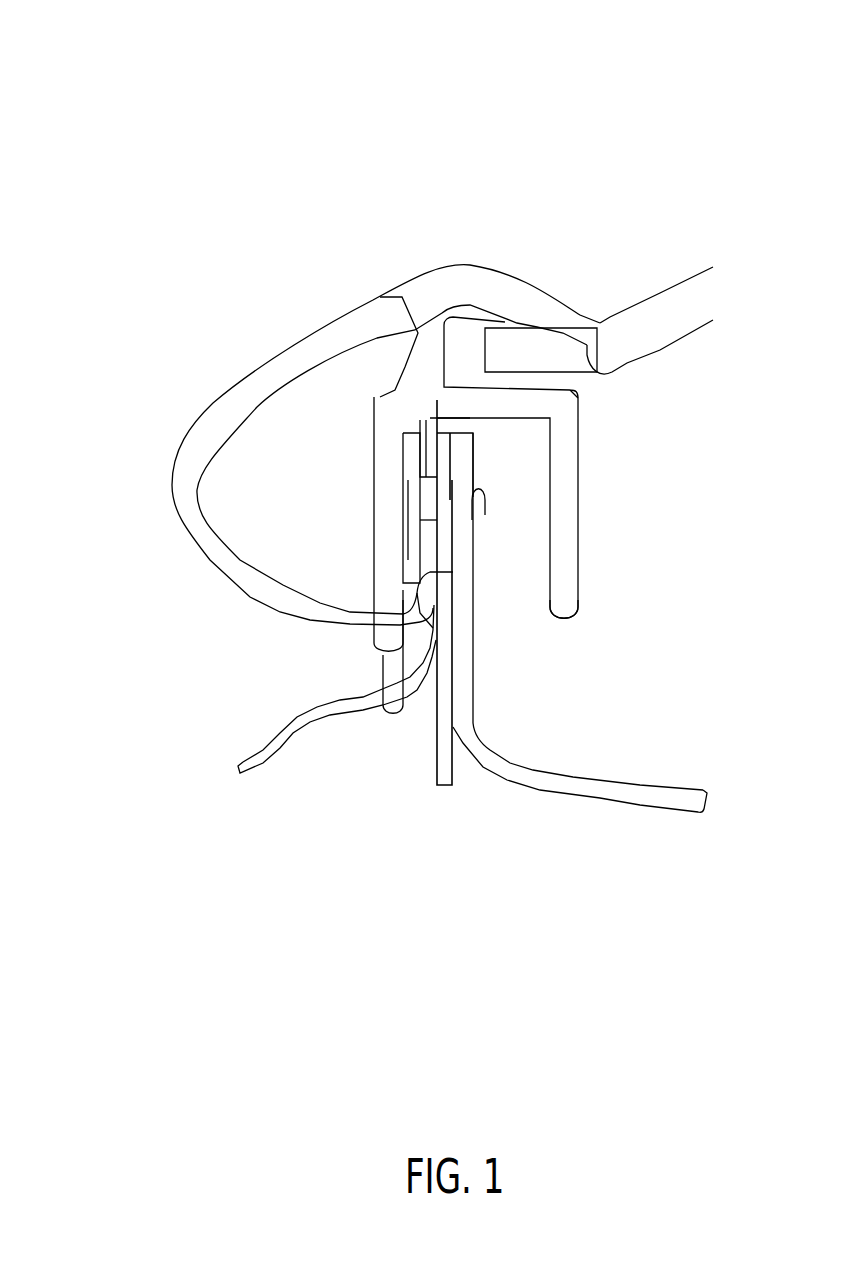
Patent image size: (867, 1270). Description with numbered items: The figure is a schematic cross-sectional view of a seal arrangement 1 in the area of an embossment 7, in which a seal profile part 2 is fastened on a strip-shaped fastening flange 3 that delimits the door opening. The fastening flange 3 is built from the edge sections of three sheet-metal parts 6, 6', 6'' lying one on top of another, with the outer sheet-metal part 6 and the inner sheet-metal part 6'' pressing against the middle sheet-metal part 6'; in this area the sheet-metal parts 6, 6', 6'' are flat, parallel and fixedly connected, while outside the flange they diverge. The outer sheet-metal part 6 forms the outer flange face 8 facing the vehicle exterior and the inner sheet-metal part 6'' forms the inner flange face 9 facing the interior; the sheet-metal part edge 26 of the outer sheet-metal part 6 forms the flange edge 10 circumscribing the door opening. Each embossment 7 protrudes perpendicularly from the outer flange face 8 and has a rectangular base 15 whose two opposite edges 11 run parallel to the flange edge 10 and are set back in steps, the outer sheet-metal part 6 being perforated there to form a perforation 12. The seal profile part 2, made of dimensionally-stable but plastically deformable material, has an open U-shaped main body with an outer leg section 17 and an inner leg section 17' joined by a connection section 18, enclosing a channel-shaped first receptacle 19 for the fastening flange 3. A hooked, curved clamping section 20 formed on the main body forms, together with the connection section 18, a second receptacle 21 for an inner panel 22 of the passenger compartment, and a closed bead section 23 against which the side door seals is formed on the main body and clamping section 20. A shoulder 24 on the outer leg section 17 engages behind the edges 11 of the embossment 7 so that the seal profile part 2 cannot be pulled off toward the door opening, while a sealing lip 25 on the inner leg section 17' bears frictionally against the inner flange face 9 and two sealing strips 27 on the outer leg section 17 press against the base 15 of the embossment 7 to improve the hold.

The seal arrangement 1 is at (136, 85).
The seal profile part 2 is at (493, 268).
The fastening flange 3 is at (478, 471).
The outer sheet-metal part 6 is at (322, 689).
The middle sheet-metal part 6' is at (415, 595).
The inner sheet-metal part 6'' is at (580, 797).
The embossment 7 is at (480, 523).
The outer flange face 8 is at (425, 628).
The inner flange face 9 is at (475, 633).
The flange edge 10 is at (412, 300).
The edge 11 is at (405, 607).
The perforation 12 is at (413, 460).
The base 15 is at (418, 527).
The outer leg section 17 is at (320, 343).
The inner leg section 17' is at (641, 402).
The connection section 18 is at (500, 403).
The first receptacle 19 is at (515, 592).
The clamping section 20 is at (461, 268).
The second receptacle 21 is at (545, 380).
The inner panel 22 is at (693, 278).
The bead section 23 is at (213, 403).
The shoulder 24 is at (420, 613).
The sealing lip 25 is at (485, 500).
The sheet-metal part edge 26 is at (430, 417).
The sealing strip 27 is at (403, 497).